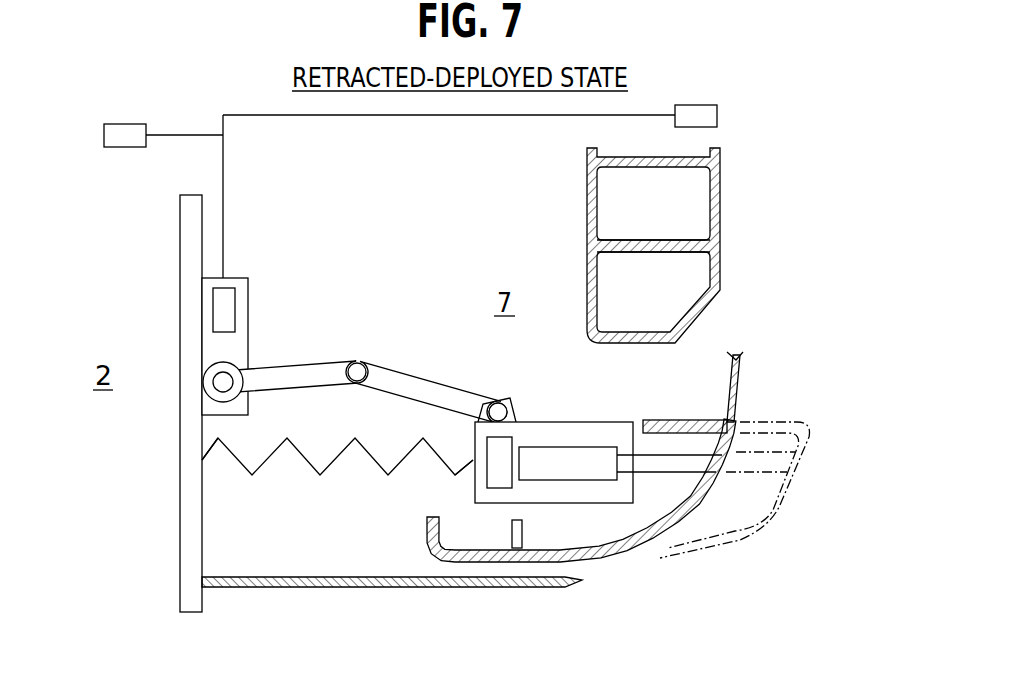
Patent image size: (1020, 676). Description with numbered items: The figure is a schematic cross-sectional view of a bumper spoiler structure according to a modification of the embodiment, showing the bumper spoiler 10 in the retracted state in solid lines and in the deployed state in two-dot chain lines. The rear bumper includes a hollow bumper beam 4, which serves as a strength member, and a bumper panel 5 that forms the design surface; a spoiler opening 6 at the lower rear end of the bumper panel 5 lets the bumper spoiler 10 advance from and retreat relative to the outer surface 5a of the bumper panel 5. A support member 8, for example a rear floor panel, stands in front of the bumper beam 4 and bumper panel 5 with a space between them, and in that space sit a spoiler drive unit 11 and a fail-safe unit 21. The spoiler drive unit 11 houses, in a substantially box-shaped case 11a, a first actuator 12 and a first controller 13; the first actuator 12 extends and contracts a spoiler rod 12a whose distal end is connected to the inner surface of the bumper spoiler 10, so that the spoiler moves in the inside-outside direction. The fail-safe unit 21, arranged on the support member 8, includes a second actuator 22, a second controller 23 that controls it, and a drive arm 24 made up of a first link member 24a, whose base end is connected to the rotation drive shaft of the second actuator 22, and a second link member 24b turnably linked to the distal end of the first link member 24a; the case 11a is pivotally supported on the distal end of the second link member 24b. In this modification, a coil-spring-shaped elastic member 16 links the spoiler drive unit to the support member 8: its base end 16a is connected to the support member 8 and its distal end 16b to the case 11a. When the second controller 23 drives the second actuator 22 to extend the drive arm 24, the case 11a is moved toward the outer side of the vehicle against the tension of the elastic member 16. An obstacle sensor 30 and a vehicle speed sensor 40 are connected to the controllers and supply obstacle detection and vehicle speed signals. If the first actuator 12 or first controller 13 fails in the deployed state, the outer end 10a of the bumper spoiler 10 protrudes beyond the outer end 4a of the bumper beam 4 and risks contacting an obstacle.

The bumper beam 4 is at (684, 242).
The outer end of the bumper beam 4a is at (722, 228).
The bumper panel 5 is at (369, 590).
The outer surface of the bumper panel 5a is at (739, 376).
The spoiler opening 6 is at (727, 420).
The support member 8 is at (180, 210).
The bumper spoiler 10 is at (713, 500).
The outer end of the bumper spoiler 10a is at (731, 425).
The spoiler drive unit 11 is at (592, 521).
The case 11a is at (586, 422).
The first actuator 12 is at (573, 472).
The spoiler rod 12a is at (673, 466).
The first controller 13 is at (497, 478).
The elastic member 16 is at (293, 478).
The base end of the elastic member 16a is at (203, 461).
The distal end of the elastic member 16b is at (475, 460).
The fail-safe unit 21 is at (425, 200).
The second actuator 22 is at (222, 362).
The second controller 23 is at (226, 305).
The drive arm 24 is at (475, 242).
The first link member 24a is at (303, 369).
The second link member 24b is at (417, 387).
The obstacle sensor 30 is at (717, 116).
The vehicle speed sensor 40 is at (104, 135).